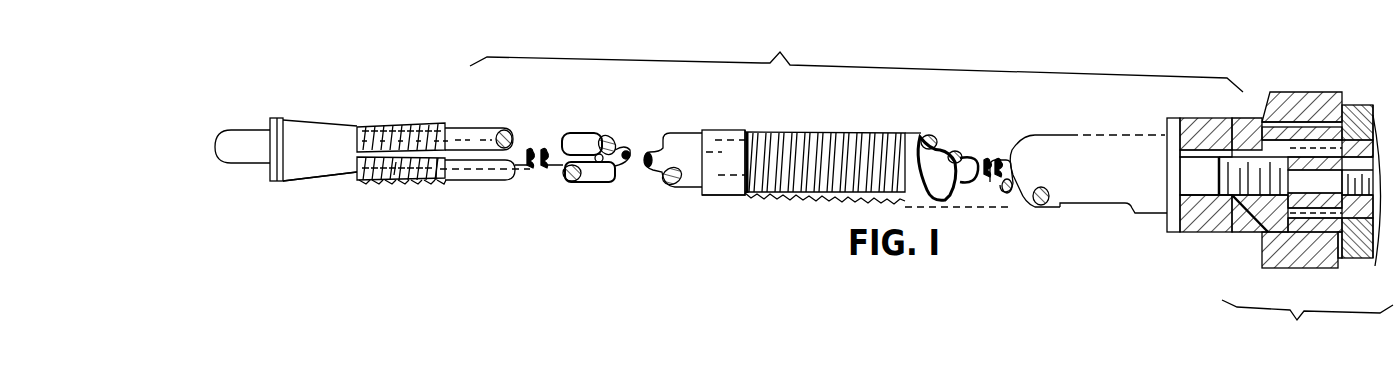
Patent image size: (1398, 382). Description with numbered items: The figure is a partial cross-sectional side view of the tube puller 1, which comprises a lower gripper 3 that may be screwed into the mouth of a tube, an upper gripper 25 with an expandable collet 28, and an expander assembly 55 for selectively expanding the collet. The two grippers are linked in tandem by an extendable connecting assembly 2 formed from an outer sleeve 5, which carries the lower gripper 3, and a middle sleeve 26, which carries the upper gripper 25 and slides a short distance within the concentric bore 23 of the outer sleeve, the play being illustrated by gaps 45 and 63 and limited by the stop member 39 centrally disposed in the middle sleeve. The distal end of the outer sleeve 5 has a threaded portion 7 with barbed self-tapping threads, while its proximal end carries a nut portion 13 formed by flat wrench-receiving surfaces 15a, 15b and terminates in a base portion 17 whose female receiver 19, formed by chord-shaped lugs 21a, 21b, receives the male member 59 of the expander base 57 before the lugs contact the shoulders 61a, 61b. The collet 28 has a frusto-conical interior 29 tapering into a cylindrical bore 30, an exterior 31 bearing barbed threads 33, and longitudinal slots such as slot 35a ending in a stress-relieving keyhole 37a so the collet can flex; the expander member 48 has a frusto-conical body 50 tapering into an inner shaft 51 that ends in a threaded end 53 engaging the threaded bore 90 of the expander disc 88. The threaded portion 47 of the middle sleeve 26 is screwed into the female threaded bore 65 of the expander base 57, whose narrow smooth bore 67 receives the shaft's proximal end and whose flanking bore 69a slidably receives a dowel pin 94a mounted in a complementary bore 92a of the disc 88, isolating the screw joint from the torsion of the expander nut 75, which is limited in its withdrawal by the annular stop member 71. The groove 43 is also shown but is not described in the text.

The tube puller 1 is at (1078, 263).
The connecting assembly 2 is at (856, 59).
The lower gripper 3 is at (805, 130).
The outer sleeve 5 is at (912, 132).
The threaded portion 7 is at (840, 199).
The nut portion 13 is at (1132, 125).
The wrench-receiving surface 15a is at (1081, 140).
The wrench-receiving surface 15b is at (1126, 205).
The base portion 17 is at (1170, 118).
The female receiver 19 is at (1194, 118).
The chord-shaped lug 21a is at (1222, 118).
The chord-shaped lug 21b is at (1220, 232).
The bore 23 is at (948, 152).
The upper gripper 25 is at (397, 124).
The middle sleeve 26 is at (605, 183).
The expandable collet 28 is at (437, 180).
The frusto-conical interior 29 is at (395, 180).
The cylindrical bore 30 is at (492, 172).
The exterior 31 is at (430, 126).
The barbed self-tapping threads 33 is at (390, 127).
The longitudinal slot 35a is at (595, 163).
The stress-relieving keyhole 37a is at (612, 134).
The stop member 39 is at (716, 135).
The groove 43 is at (951, 186).
The gap 45 is at (746, 196).
The threaded portion 47 is at (1270, 118).
The expander member 48 is at (318, 172).
The frusto-conical body 50 is at (320, 157).
The inner shaft 51 is at (623, 150).
The threaded end 53 is at (1378, 266).
The expander assembly 55 is at (1307, 326).
The expander base 57 is at (1258, 232).
The male member 59 is at (1199, 176).
The shoulder 61a is at (1256, 125).
The shoulder 61b is at (1240, 232).
The gap 63 is at (1195, 232).
The female threaded bore 65 is at (1185, 188).
The smooth bore 67 is at (1315, 194).
The bore 69a is at (1300, 122).
The annular stop member 71 is at (1284, 118).
The expander nut 75 is at (1295, 268).
The expander disc 88 is at (1328, 268).
The threaded bore 90 is at (1362, 260).
The bore 92a is at (1366, 105).
The dowel pin 94a is at (1380, 110).